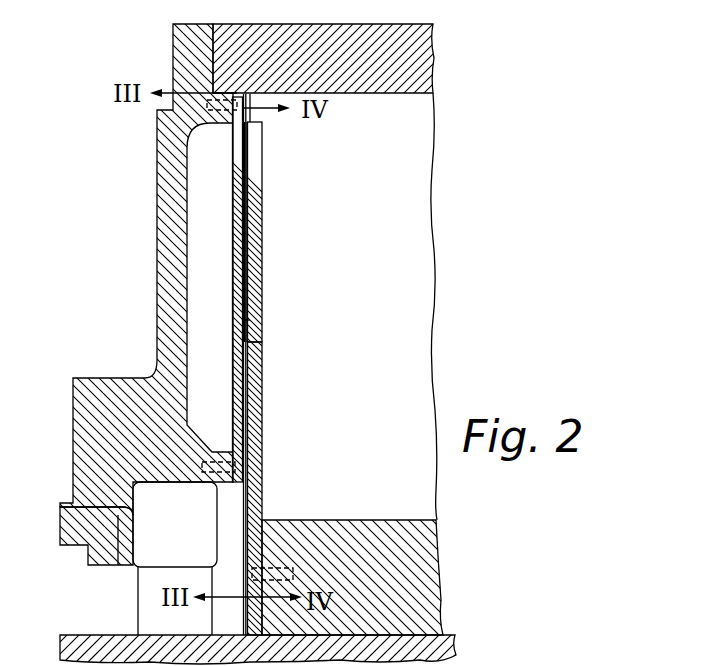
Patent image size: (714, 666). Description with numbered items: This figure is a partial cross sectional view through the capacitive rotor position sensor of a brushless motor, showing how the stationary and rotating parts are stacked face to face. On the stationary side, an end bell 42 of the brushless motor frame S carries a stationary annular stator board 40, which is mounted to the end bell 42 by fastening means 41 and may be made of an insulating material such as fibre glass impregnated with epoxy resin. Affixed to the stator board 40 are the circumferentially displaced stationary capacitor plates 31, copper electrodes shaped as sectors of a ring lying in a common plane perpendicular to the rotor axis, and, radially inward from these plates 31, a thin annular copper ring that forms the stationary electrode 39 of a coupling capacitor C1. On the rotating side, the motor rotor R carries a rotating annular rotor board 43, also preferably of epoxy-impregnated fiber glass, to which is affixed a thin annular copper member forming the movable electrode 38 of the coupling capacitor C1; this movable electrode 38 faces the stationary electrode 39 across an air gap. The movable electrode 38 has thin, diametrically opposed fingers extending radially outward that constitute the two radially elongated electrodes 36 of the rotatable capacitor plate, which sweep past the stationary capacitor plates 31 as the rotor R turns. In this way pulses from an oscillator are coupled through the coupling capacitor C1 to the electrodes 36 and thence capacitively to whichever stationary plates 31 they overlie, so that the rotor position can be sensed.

The brushless motor frame S is at (378, 12).
The motor rotor R is at (402, 569).
The stationary capacitor plates 31 is at (262, 173).
The radially extending electrodes 36 is at (250, 188).
The movable electrode 38 is at (247, 318).
The stationary electrode 39 is at (245, 293).
The stator board 40 is at (237, 99).
The fastening means 41 is at (230, 112).
The end bell 42 is at (157, 255).
The rotor board 43 is at (261, 393).
The coupling capacitor C1 is at (254, 320).